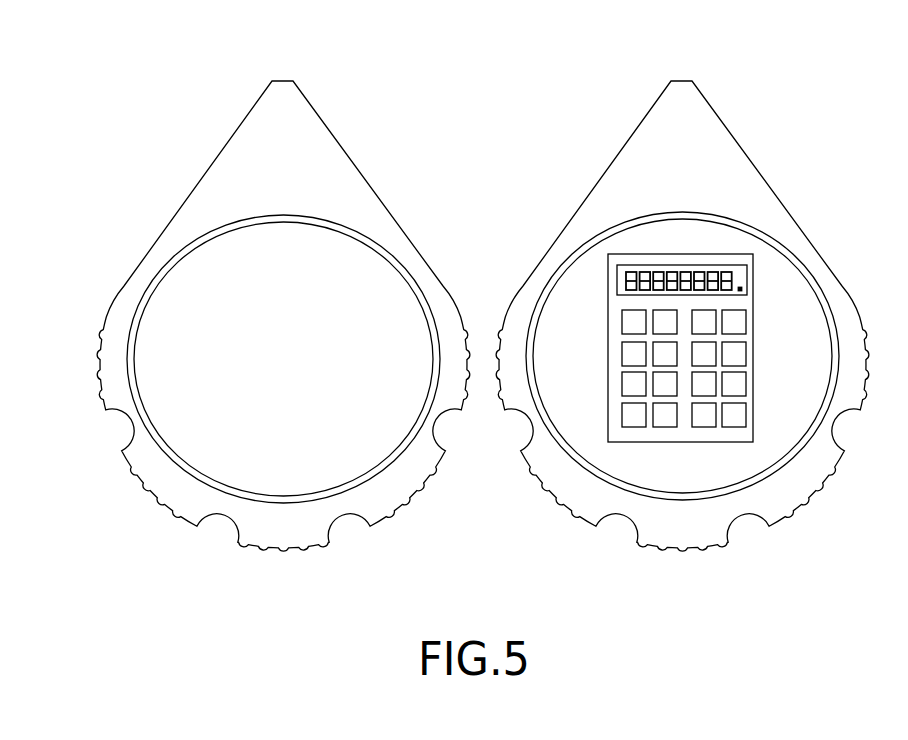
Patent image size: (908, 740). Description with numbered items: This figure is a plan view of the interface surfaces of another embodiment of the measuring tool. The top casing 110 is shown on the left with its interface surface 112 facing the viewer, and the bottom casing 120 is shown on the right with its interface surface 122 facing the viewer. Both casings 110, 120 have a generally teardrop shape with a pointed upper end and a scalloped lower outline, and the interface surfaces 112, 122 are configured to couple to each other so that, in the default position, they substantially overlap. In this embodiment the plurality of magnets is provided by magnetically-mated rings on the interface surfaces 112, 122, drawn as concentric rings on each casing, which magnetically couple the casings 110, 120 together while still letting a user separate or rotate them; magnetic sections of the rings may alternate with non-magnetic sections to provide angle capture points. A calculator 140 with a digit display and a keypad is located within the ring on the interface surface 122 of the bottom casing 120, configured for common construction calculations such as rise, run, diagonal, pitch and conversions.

The top casing 110 is at (158, 114).
The interface surface 112 is at (185, 222).
The bottom casing 120 is at (770, 64).
The interface surface 122 is at (740, 180).
The calculator 140 is at (738, 301).